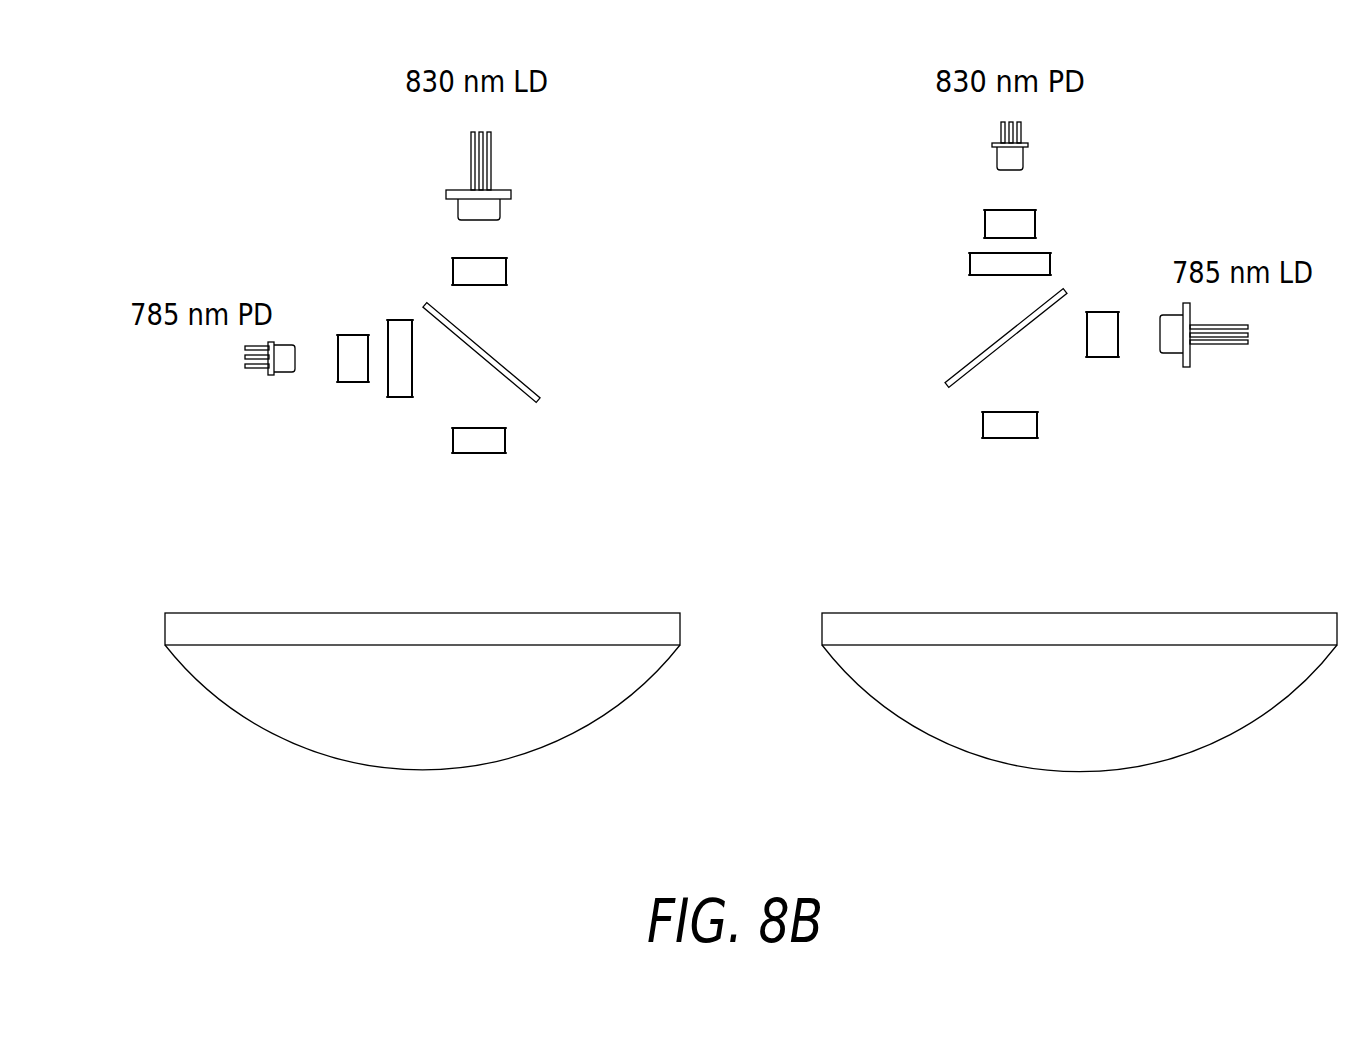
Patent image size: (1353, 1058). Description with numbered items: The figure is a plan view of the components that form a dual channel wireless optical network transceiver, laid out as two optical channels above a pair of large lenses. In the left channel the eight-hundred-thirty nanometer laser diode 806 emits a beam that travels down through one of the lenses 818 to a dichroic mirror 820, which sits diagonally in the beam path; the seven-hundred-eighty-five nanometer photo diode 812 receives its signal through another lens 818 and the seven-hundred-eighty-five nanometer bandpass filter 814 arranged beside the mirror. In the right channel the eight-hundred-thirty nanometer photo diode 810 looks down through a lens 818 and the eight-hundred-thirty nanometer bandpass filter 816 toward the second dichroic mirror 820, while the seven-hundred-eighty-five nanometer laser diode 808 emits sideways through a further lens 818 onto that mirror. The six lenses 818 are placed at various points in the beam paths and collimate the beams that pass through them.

The 830 nm laser diode 806 is at (500, 190).
The 785 nm laser diode 808 is at (1187, 367).
The 830 nm photo diode 810 is at (1023, 155).
The 785 nm photo diode 812 is at (282, 375).
The 785 nm bandpass filter 814 is at (402, 397).
The 830 nm bandpass filter 816 is at (970, 265).
The lenses 818 is at (495, 258).
The dichroic mirrors 820 is at (500, 360).